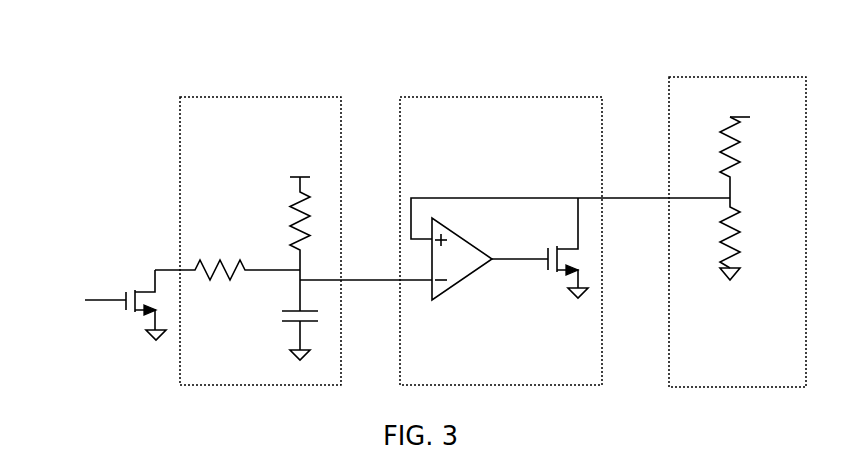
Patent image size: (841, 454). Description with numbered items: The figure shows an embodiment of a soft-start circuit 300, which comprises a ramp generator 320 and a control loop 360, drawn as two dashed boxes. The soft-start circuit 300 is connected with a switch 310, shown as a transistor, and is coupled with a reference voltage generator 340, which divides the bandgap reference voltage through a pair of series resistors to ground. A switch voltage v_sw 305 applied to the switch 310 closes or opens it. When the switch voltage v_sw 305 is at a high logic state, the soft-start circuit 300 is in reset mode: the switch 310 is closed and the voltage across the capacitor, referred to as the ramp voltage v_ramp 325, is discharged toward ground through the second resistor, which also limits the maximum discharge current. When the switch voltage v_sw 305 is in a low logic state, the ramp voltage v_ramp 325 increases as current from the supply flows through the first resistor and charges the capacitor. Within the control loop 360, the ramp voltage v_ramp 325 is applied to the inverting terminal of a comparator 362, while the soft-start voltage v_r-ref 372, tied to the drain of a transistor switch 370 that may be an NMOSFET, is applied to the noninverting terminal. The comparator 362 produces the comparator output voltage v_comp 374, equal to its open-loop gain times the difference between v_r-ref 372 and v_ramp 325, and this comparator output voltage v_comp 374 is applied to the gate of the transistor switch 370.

The soft-start circuit 300 is at (57, 52).
The switch voltage v_sw 305 is at (63, 283).
The switch 310 is at (148, 282).
The ramp generator 320 is at (268, 95).
The ramp voltage v_ramp 325 is at (367, 248).
The reference voltage generator 340 is at (723, 70).
The control loop 360 is at (492, 97).
The comparator 362 is at (453, 297).
The transistor switch 370 is at (552, 247).
The soft-start voltage v_r-ref 372 is at (472, 184).
The comparator output voltage v_comp 374 is at (515, 293).